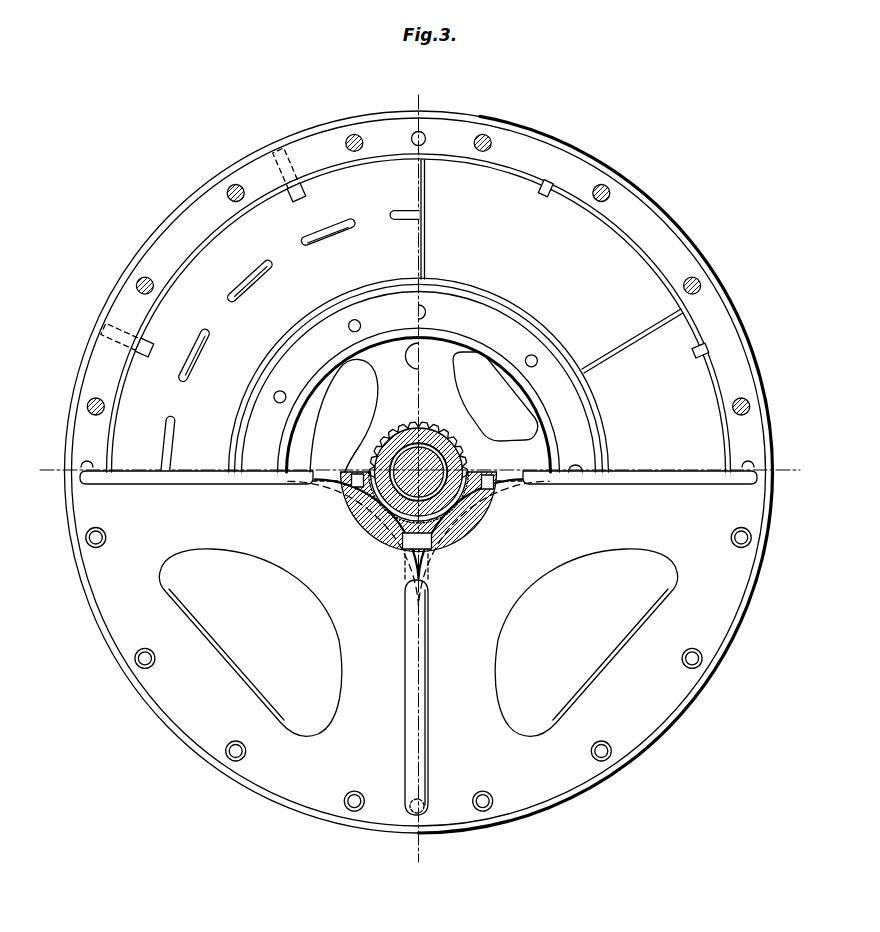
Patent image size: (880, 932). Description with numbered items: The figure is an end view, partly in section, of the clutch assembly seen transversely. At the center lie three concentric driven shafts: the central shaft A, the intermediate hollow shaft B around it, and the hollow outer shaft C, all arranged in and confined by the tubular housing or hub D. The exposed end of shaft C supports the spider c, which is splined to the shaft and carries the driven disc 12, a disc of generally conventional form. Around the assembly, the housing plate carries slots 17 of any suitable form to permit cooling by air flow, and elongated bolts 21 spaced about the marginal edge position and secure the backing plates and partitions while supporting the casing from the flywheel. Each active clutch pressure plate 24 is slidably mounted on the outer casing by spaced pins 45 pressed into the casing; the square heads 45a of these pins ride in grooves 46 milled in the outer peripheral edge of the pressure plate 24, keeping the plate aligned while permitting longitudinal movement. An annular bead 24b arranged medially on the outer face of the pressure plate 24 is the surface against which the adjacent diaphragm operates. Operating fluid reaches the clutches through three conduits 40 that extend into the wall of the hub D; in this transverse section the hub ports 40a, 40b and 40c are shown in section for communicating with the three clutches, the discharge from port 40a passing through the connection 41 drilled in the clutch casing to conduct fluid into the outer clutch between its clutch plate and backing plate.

The driven disc 12 is at (563, 286).
The slots 17 is at (418, 642).
The elongated bolts 21 is at (239, 188).
The active clutch pressure plate 24 is at (197, 266).
The annular bead 24b is at (313, 252).
The conduits 40 is at (183, 486).
The hub port 40a is at (432, 548).
The hub port 40b is at (508, 496).
The hub port 40c is at (334, 500).
The ports 41 is at (84, 462).
The pins 45 is at (291, 156).
The square heads 45a is at (307, 192).
The grooves 46 is at (298, 201).
The central shaft A is at (432, 472).
The intermediate hollow shaft B is at (436, 433).
The hollow outer shaft C is at (373, 448).
The spider c is at (375, 385).
The tubular housing D is at (350, 538).